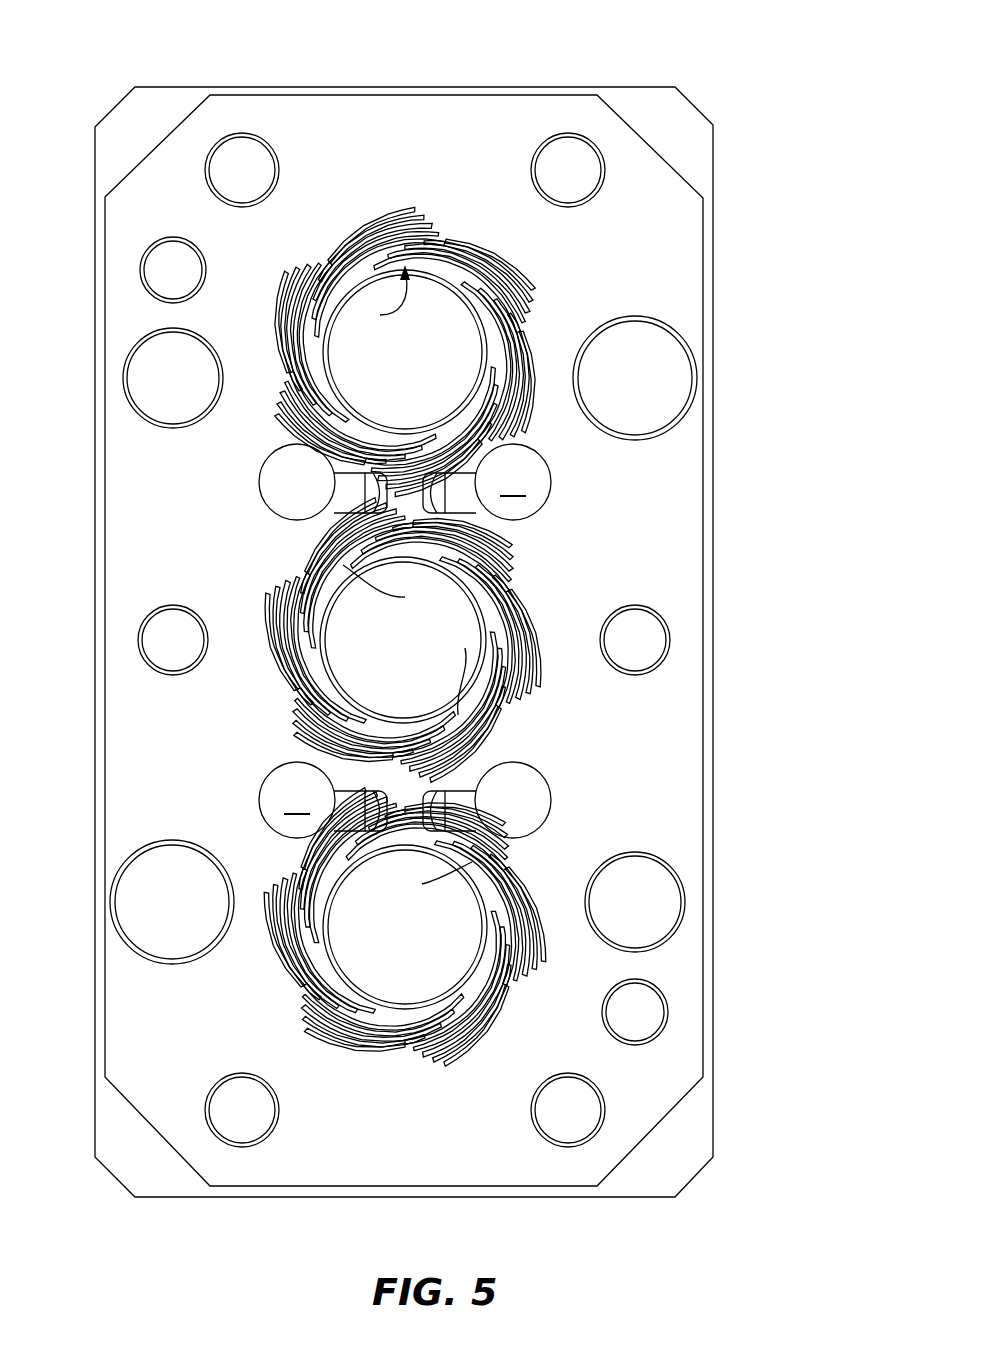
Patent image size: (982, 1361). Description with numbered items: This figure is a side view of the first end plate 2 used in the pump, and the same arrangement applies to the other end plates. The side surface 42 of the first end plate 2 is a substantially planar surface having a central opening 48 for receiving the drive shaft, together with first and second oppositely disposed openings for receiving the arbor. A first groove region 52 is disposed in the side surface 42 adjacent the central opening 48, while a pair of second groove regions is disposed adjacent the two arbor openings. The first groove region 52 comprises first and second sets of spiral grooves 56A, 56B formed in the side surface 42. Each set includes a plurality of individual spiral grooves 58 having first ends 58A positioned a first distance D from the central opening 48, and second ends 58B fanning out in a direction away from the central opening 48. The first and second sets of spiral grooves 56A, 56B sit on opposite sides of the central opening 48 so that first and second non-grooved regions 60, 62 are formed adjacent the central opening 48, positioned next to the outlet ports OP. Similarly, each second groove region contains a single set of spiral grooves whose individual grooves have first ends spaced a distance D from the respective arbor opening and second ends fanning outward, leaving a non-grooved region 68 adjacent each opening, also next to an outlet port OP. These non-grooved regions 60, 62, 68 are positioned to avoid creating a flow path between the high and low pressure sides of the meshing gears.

The first end plate 2 is at (444, 631).
The side surface 42 is at (658, 261).
The central opening 48 is at (418, 656).
The first groove region 52 is at (498, 637).
The first set of spiral grooves 56A is at (540, 690).
The second set of spiral grooves 56B is at (272, 610).
The individual spiral grooves 58 is at (540, 628).
The first ends 58A is at (512, 553).
The second ends 58B is at (330, 758).
The first non-grooved region 60 is at (347, 734).
The second non-grooved region 62 is at (481, 562).
The non-grooved region 68 is at (501, 426).